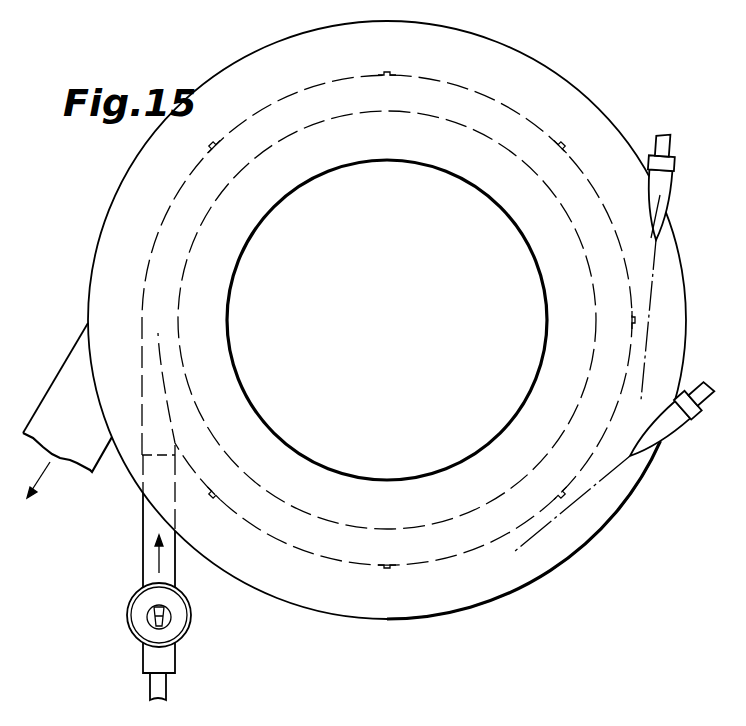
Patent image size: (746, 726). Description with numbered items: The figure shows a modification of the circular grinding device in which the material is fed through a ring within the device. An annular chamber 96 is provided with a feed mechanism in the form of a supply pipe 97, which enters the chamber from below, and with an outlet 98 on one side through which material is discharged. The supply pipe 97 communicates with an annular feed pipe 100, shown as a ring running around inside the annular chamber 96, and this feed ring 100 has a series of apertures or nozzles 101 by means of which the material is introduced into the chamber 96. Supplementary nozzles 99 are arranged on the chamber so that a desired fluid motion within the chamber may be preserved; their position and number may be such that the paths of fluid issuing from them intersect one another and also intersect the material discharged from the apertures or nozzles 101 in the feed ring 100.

The annular chamber 96 is at (563, 275).
The feed mechanism 97 is at (156, 570).
The outlet 98 is at (77, 447).
The supplementary nozzles 99 is at (678, 426).
The annular feed pipe 100 is at (432, 523).
The apertures or nozzles 101 is at (556, 146).